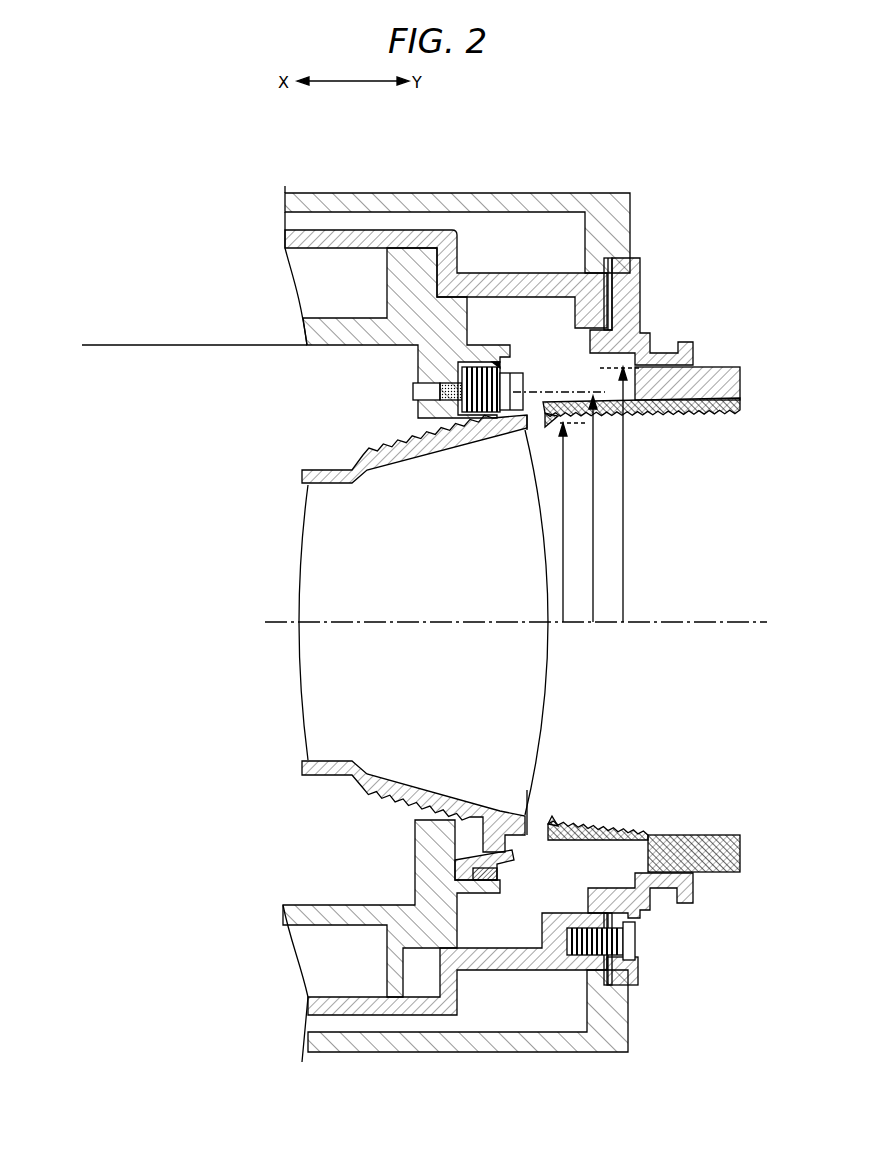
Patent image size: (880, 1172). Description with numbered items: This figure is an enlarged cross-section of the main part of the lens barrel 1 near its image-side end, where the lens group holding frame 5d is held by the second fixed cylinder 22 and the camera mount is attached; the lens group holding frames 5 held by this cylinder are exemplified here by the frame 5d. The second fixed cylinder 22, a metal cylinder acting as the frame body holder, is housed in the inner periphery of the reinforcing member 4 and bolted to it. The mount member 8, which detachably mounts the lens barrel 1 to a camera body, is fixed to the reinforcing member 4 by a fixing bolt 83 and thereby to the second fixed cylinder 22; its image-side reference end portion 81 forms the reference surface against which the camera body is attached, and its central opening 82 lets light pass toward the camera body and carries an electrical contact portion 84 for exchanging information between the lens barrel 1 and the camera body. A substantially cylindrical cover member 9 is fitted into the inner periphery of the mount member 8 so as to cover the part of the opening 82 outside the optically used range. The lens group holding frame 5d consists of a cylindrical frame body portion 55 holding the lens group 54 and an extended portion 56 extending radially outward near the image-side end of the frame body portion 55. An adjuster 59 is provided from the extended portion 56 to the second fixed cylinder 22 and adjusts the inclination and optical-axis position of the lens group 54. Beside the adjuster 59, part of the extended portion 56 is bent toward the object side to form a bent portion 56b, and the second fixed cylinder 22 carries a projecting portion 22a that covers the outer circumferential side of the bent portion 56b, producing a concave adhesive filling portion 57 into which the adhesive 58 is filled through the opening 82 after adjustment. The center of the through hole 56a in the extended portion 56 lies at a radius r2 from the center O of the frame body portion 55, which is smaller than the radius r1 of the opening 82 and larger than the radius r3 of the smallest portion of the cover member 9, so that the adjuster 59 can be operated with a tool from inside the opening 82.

The lens barrel 1 is at (724, 157).
The reinforcing member 4 is at (430, 230).
The exterior barrel 5 is at (519, 193).
The lens group holding frame 5d is at (636, 757).
The mount member 8 is at (652, 340).
The cover member 9 is at (718, 836).
The second fixed cylinder 22 is at (337, 345).
The projecting portion 22a is at (483, 895).
The lens group 54 is at (300, 703).
The frame body portion 55 is at (530, 818).
The extended portion 56 is at (527, 838).
The through hole 56a is at (530, 380).
The bent portion 56b is at (480, 813).
The adhesive filling portion 57 is at (505, 876).
The adhesive 58 is at (503, 882).
The adjuster 59 is at (534, 367).
The reference end portion 81 is at (641, 283).
The opening 82 is at (693, 363).
The fixing bolt 83 is at (637, 935).
The electrical contact portion 84 is at (740, 382).
The center O is at (752, 620).
The radius of the opening r1 is at (623, 494).
The radius of the through hole center r2 is at (602, 509).
The radius of the smallest portion of the cover member r3 is at (573, 522).